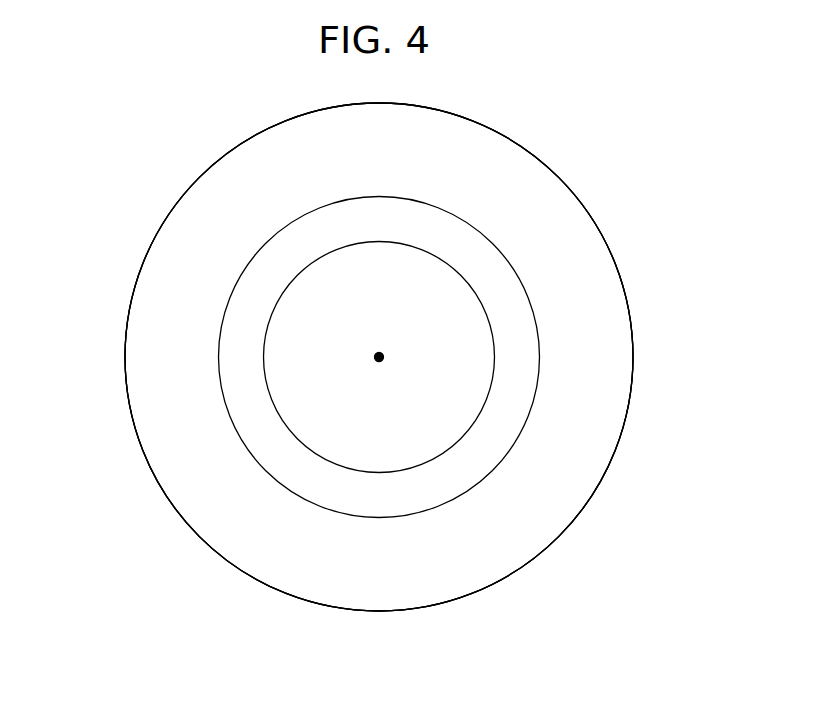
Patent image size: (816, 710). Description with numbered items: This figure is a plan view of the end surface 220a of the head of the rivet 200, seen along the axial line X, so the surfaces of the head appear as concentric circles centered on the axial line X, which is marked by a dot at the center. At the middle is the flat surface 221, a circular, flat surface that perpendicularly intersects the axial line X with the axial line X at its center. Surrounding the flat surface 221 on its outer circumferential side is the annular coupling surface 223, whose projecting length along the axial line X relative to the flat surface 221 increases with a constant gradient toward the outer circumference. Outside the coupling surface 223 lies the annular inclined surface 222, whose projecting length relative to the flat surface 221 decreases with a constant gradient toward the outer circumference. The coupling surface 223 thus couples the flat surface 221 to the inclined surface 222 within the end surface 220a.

The substrate 200 is at (142, 292).
The end surface 220a is at (213, 200).
The inclined surface 222 is at (613, 285).
The coupling surface 223 is at (520, 350).
The flat surface 221 is at (468, 398).
The axial line X is at (379, 351).